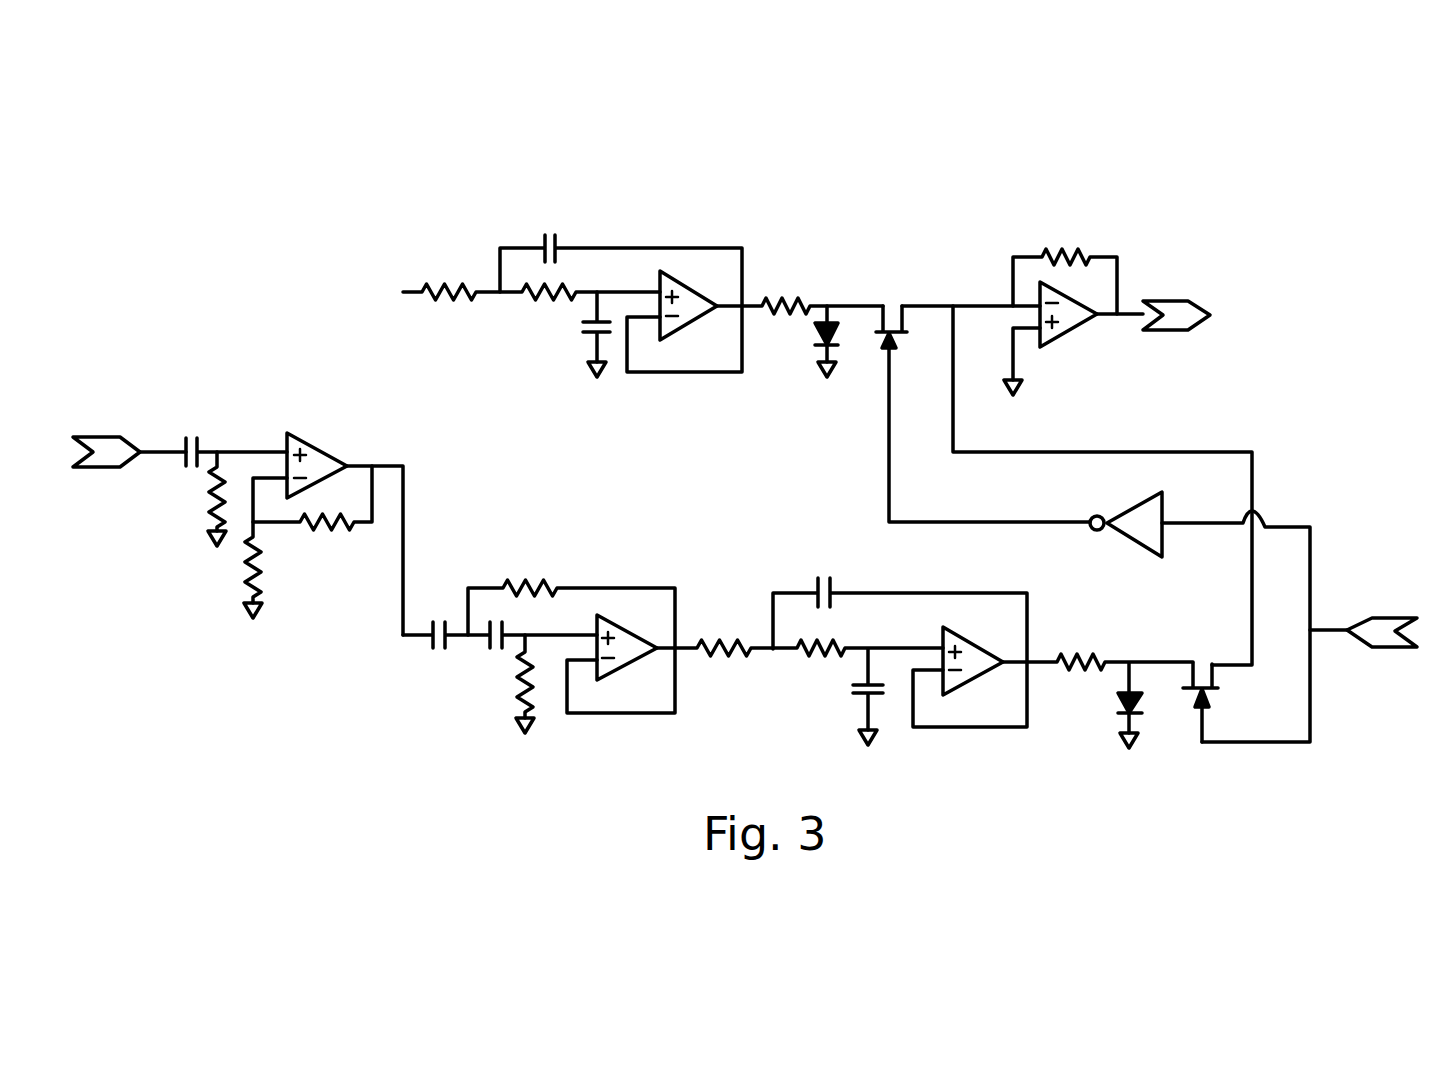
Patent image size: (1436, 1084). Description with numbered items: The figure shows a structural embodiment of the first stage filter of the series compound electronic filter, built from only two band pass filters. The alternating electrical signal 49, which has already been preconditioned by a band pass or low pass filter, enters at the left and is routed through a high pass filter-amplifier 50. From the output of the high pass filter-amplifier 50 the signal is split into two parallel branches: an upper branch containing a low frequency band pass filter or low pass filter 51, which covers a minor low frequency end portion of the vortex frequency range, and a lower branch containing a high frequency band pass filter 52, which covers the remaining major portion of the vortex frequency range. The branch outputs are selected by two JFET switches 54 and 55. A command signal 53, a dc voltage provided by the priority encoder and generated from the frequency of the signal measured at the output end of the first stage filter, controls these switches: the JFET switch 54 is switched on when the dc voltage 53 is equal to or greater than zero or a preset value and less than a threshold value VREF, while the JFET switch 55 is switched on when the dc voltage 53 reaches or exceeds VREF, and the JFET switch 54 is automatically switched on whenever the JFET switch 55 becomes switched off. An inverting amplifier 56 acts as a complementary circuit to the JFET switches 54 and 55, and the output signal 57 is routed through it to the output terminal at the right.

The alternating electrical signal 49 is at (103, 438).
The high pass filter-amplifier 50 is at (273, 442).
The low frequency band pass filter 51 is at (626, 234).
The high frequency band pass filter 52 is at (594, 723).
The command signal 53 is at (1383, 647).
The JFET switch 54 is at (874, 298).
The JFET switch 55 is at (1181, 703).
The inverting amplifier 56 is at (1082, 332).
The output signal 57 is at (1180, 300).